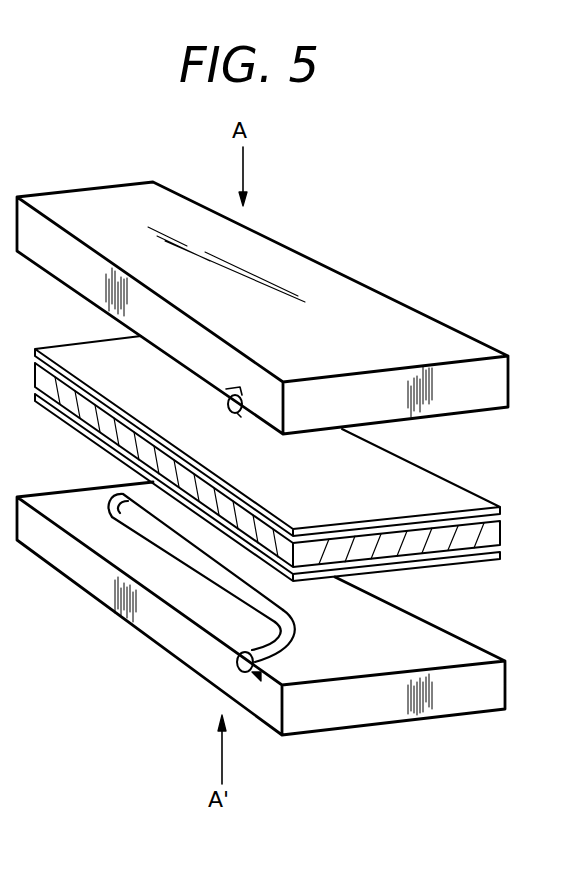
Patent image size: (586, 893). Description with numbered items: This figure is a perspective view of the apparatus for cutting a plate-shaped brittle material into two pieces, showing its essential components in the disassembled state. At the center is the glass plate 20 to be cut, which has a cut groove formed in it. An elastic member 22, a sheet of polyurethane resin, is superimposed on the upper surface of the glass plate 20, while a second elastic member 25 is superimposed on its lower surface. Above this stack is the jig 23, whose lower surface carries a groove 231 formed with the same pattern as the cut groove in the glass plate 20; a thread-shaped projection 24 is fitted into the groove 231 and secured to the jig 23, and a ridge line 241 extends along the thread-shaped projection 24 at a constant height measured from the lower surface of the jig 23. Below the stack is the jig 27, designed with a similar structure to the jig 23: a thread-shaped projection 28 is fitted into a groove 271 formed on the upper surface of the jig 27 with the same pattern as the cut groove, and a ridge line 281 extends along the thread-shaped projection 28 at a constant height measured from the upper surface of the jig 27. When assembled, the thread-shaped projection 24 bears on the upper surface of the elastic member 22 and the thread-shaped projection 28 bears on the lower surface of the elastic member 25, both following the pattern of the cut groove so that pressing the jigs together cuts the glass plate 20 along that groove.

The glass plate 20 is at (497, 528).
The elastic member 22 is at (496, 505).
The jig 23 is at (505, 378).
The groove 231 is at (219, 387).
The thread-shaped projection 24 is at (223, 404).
The ridge line 241 is at (233, 411).
The elastic member 25 is at (497, 553).
The jig 27 is at (505, 669).
The groove 271 is at (239, 675).
The thread-shaped projection 28 is at (283, 648).
The ridge line 281 is at (298, 626).